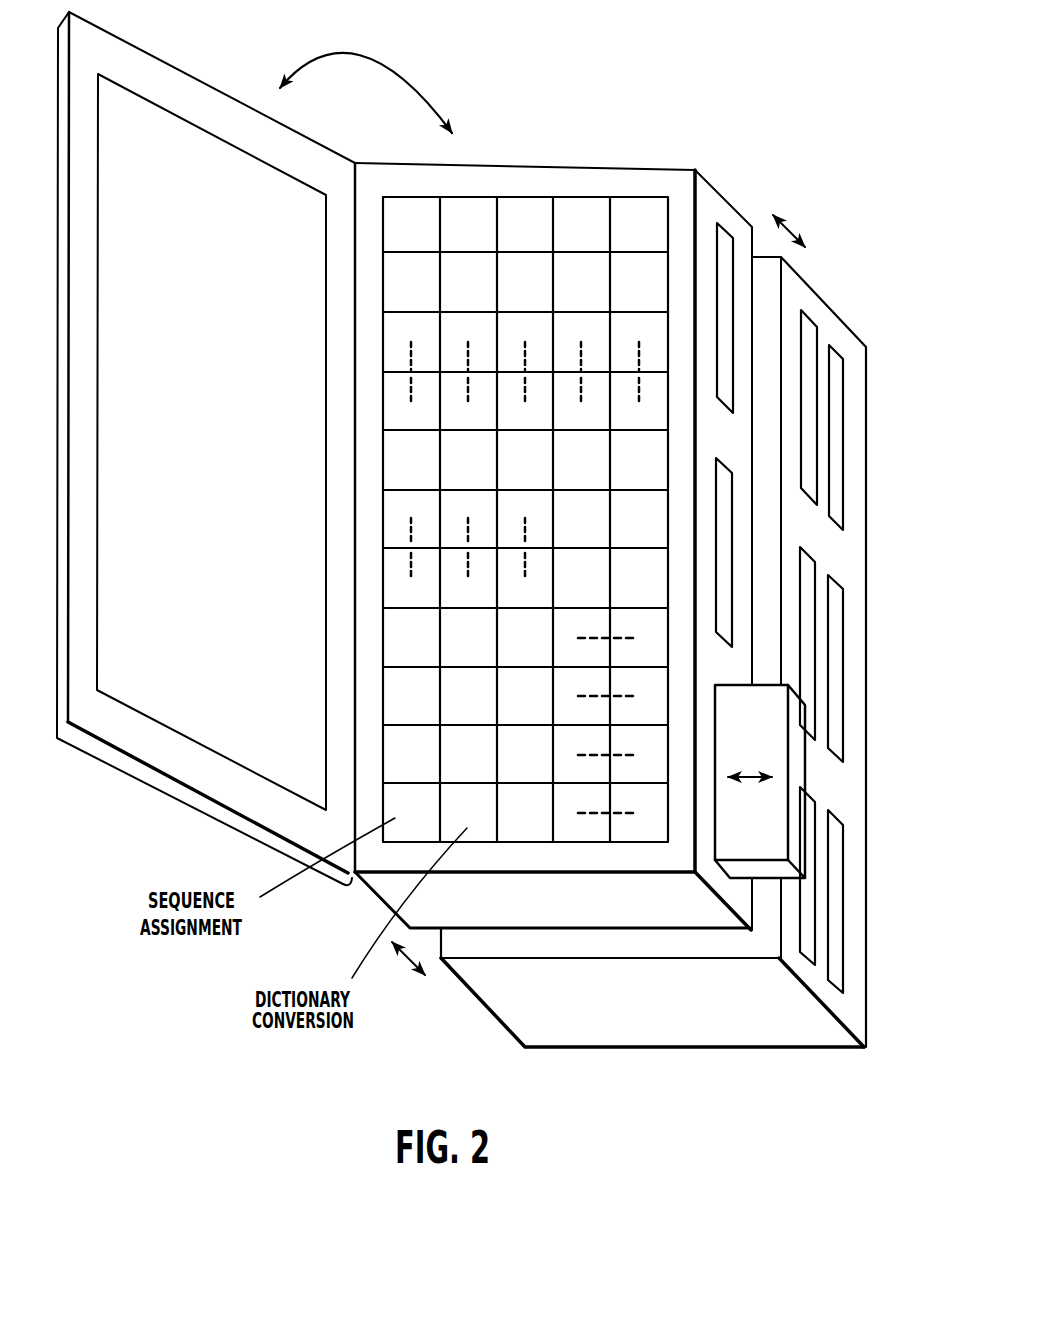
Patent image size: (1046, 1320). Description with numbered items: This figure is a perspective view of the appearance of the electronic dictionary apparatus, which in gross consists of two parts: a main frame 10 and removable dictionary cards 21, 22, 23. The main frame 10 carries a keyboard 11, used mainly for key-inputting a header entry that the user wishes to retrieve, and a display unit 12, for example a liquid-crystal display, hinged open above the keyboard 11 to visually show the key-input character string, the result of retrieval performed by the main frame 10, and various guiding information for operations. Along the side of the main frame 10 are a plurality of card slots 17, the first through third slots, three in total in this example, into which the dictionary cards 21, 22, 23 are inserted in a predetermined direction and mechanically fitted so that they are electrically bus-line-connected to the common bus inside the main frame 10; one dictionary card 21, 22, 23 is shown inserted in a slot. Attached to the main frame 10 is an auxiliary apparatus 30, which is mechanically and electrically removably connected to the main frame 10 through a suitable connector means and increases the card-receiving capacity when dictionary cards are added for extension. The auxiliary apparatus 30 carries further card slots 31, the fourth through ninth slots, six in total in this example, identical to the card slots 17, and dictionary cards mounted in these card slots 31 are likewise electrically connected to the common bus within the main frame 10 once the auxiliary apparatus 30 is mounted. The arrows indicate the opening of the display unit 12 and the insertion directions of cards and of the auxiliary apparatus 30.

The main frame 10 is at (398, 880).
The keyboard 11 is at (537, 197).
The display unit 12 is at (177, 692).
The card slots 17 is at (724, 491).
The dictionary card 21 is at (817, 781).
The dictionary card 22 is at (817, 781).
The dictionary card 23 is at (773, 745).
The auxiliary apparatus 30 is at (493, 1002).
The card slots 31 is at (838, 361).